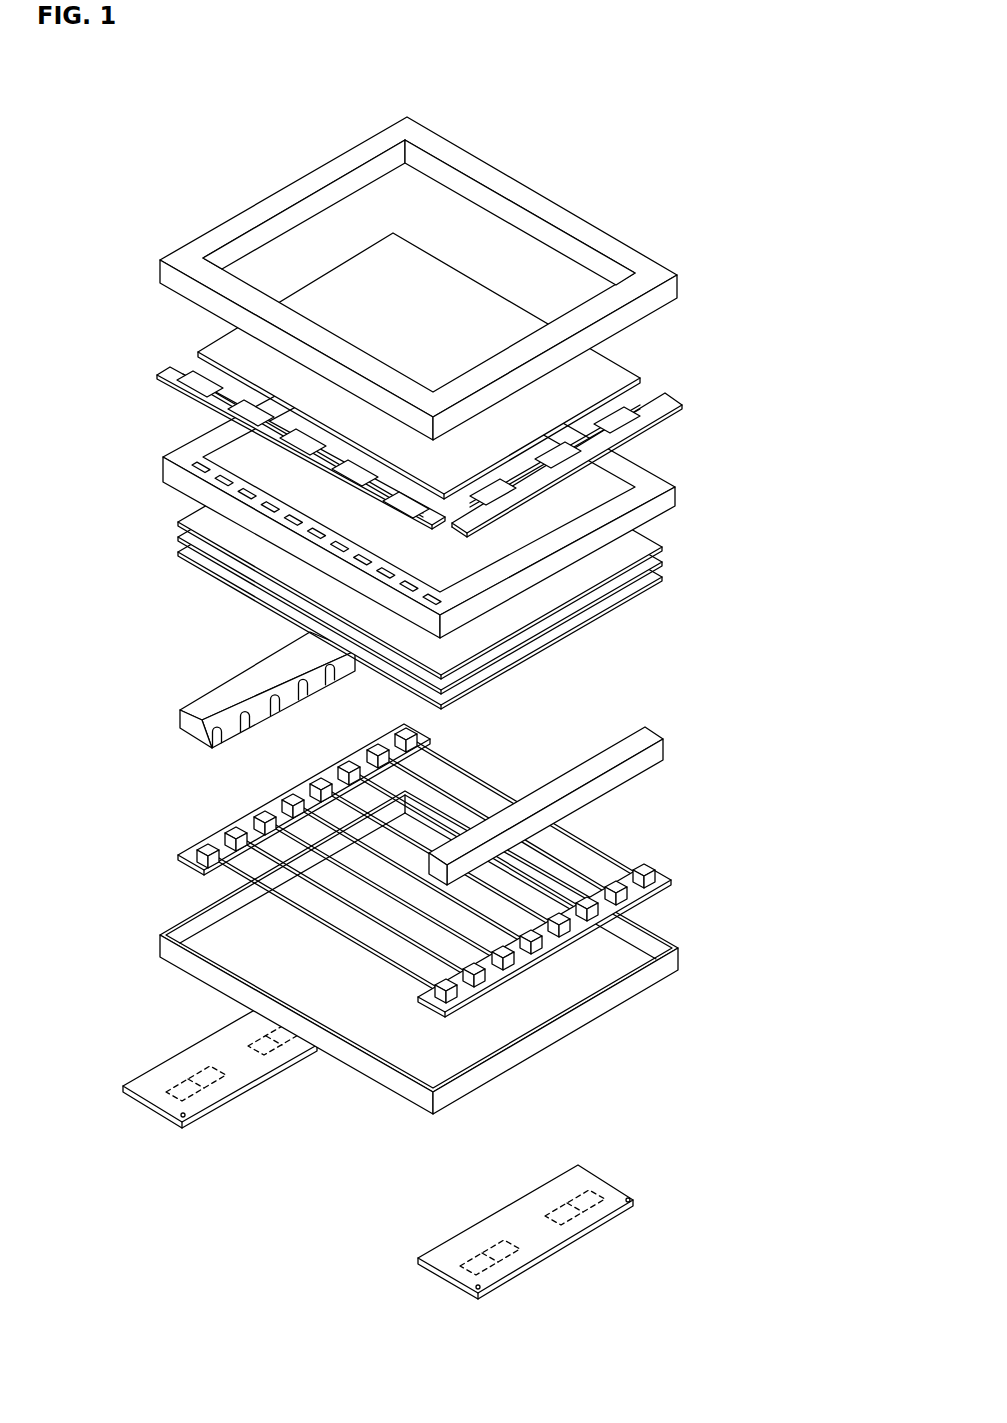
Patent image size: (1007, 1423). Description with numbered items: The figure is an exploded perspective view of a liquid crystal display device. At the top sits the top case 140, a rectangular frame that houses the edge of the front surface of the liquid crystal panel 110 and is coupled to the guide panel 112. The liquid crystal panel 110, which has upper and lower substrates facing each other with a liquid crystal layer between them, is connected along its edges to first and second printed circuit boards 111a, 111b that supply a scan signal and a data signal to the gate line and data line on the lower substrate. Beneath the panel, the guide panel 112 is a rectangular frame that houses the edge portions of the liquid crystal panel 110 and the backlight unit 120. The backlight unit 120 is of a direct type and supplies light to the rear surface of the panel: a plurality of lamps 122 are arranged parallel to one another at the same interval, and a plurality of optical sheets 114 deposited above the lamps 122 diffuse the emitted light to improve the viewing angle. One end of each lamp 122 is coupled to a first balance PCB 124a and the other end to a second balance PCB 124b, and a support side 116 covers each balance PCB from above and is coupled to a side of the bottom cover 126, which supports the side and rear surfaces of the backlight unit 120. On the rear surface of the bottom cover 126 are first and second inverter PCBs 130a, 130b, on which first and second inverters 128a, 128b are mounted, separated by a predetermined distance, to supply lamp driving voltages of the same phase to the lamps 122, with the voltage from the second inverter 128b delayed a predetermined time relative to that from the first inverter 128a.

The liquid crystal panel 110 is at (612, 372).
The first printed circuit board 111a is at (154, 408).
The second printed circuit board 111b is at (690, 428).
The guide panel 112 is at (668, 502).
The optical sheets 114 is at (667, 537).
The support side 116 is at (220, 690).
The backlight unit 120 is at (458, 721).
The lamps 122 is at (485, 788).
The first balance PCB 124a is at (216, 850).
The second balance PCB 124b is at (640, 893).
The bottom cover 126 is at (660, 975).
The first inverter 128a is at (258, 1034).
The second inverter 128b is at (165, 1100).
The first inverter PCB 130a is at (198, 1118).
The second inverter PCB 130b is at (631, 1200).
The top case 140 is at (683, 287).